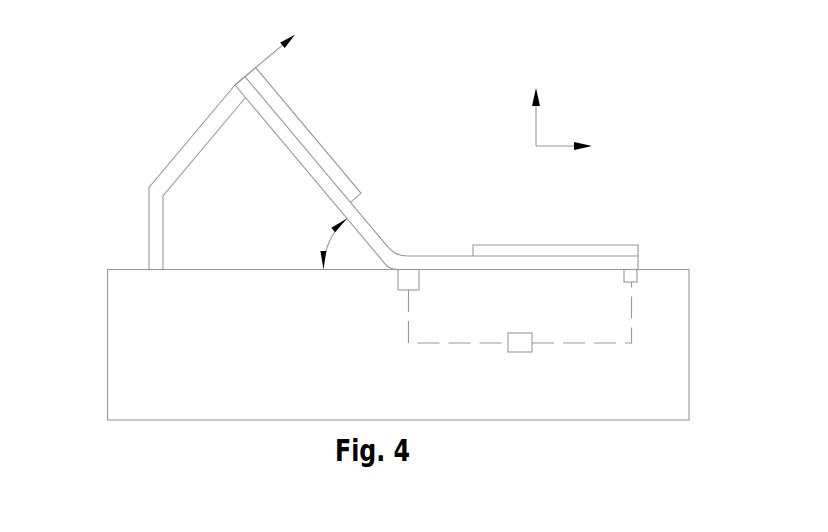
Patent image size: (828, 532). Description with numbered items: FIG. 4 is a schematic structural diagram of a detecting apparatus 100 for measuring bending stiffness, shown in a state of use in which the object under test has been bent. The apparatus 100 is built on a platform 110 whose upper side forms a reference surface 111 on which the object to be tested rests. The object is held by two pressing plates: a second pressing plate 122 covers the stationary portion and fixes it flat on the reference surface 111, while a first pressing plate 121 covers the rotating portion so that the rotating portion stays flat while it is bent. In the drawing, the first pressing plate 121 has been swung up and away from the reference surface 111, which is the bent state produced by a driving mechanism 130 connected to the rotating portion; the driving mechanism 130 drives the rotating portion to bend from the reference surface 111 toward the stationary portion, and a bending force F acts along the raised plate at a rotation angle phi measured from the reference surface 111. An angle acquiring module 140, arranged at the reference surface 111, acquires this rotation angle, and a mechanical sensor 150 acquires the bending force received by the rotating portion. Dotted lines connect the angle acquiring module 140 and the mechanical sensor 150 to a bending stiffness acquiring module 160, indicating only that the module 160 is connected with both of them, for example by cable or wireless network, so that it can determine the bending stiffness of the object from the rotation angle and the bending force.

The detecting apparatus 100 is at (523, 30).
The platform 110 is at (120, 355).
The reference surface 111 is at (248, 270).
The first pressing plate 121 is at (310, 131).
The second pressing plate 122 is at (553, 245).
The driving mechanism 130 is at (187, 158).
The angle acquiring module 140 is at (408, 280).
The mechanical sensor 150 is at (635, 278).
The bending stiffness acquiring module 160 is at (522, 343).